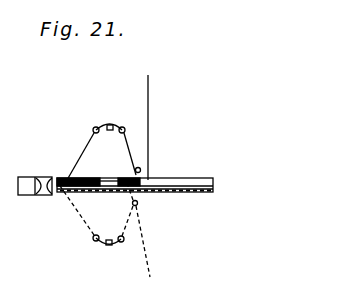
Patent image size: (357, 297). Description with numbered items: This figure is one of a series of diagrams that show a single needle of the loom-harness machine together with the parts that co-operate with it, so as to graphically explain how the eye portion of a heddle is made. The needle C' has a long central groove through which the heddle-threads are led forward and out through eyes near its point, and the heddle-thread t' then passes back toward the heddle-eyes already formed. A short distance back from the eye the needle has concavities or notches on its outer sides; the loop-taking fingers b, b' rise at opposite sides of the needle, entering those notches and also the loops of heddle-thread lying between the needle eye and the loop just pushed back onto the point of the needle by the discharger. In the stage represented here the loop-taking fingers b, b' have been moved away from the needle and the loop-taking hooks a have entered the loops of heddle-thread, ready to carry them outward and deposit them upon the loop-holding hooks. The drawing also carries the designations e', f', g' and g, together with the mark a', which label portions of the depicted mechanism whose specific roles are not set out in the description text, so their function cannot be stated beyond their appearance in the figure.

The needle C' is at (135, 174).
The end fitting e' is at (32, 198).
The rod connection f' is at (51, 166).
The heddle-thread t' is at (158, 127).
The link a' is at (104, 145).
The loop-taking finger b' is at (109, 111).
The pivot g' is at (153, 162).
The pivot g is at (149, 231).
The loop-taking hook a is at (99, 226).
The loop-taking finger b is at (107, 260).